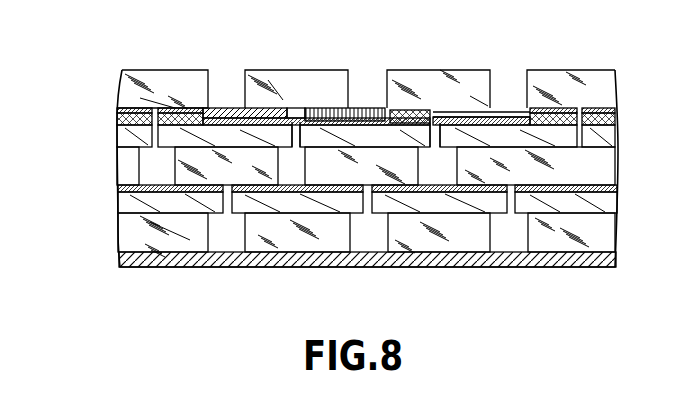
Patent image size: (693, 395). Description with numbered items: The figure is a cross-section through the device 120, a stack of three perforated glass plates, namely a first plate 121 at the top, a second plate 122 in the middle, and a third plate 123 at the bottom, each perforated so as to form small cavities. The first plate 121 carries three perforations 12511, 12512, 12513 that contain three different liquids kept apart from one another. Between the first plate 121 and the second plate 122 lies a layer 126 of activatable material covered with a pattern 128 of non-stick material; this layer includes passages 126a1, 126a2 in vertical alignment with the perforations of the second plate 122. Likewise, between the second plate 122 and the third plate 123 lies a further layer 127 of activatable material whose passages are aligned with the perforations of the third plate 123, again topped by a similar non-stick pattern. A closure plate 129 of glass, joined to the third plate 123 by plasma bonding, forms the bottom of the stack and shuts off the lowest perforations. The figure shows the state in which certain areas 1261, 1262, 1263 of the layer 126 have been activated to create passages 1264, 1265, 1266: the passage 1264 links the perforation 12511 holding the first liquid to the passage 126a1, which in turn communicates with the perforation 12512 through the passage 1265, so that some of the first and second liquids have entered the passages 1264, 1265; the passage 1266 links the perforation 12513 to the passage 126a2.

The device 120 is at (109, 256).
The first plate 121 is at (128, 102).
The second plate 122 is at (133, 170).
The third plate 123 is at (127, 228).
The layer of activatable material 126 is at (127, 138).
The passage of the layer of activatable material 126a1 is at (300, 122).
The passage of the layer of activatable material 126a2 is at (435, 125).
The layer of activatable material 127 is at (128, 201).
The pattern of non-stick material 128 is at (618, 191).
The closure plate 129 is at (218, 260).
The area of the layer of activatable material 1261 is at (178, 110).
The area of the layer of activatable material 1262 is at (426, 101).
The area of the layer of activatable material 1263 is at (602, 110).
The passage 1264 is at (273, 106).
The passage 1265 is at (323, 106).
The passage 1266 is at (463, 113).
The perforation 12511 is at (222, 84).
The perforation 12512 is at (365, 83).
The perforation 12513 is at (527, 90).